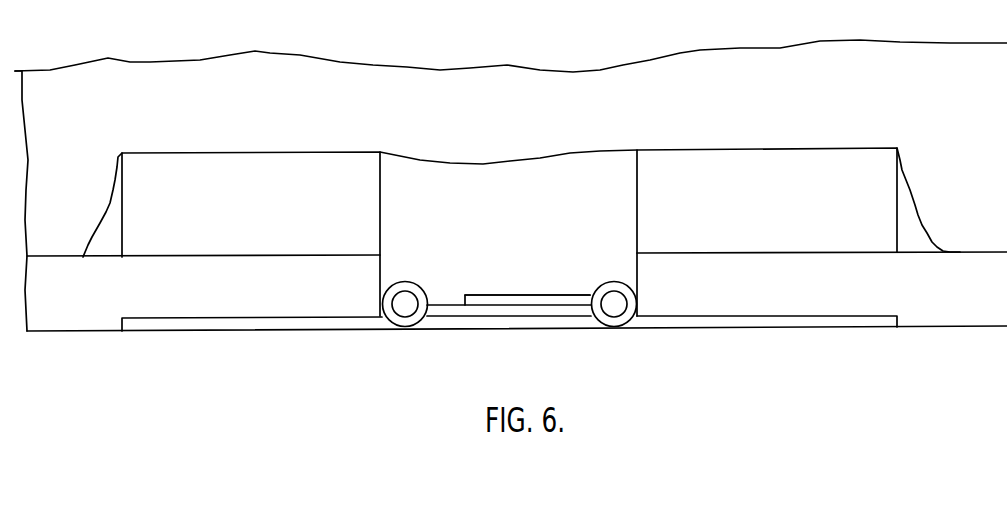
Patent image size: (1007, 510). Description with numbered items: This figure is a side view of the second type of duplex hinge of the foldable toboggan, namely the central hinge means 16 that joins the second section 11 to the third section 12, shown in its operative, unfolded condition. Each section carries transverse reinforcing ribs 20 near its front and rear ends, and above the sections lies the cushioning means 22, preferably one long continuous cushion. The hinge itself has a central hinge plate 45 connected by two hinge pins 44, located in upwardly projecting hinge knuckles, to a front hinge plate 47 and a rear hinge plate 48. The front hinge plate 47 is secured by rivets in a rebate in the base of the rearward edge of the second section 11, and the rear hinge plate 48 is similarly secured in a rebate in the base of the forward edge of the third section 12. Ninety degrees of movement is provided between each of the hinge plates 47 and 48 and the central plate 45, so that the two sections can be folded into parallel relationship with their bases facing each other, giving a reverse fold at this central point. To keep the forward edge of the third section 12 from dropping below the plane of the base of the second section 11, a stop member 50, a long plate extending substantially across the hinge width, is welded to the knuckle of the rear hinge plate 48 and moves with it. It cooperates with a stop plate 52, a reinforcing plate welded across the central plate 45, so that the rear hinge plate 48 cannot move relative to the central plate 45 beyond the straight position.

The second section 11 is at (83, 263).
The third section 12 is at (957, 262).
The central hinge means 16 is at (509, 280).
The transverse reinforcing ribs 20 is at (298, 158).
The cushioning means 22 is at (423, 82).
The hinge pins 44 is at (406, 305).
The central hinge plate 45 is at (508, 321).
The front hinge plate 47 is at (285, 323).
The rear hinge plate 48 is at (708, 320).
The stop member 50 is at (547, 301).
The stop plate 52 is at (483, 307).